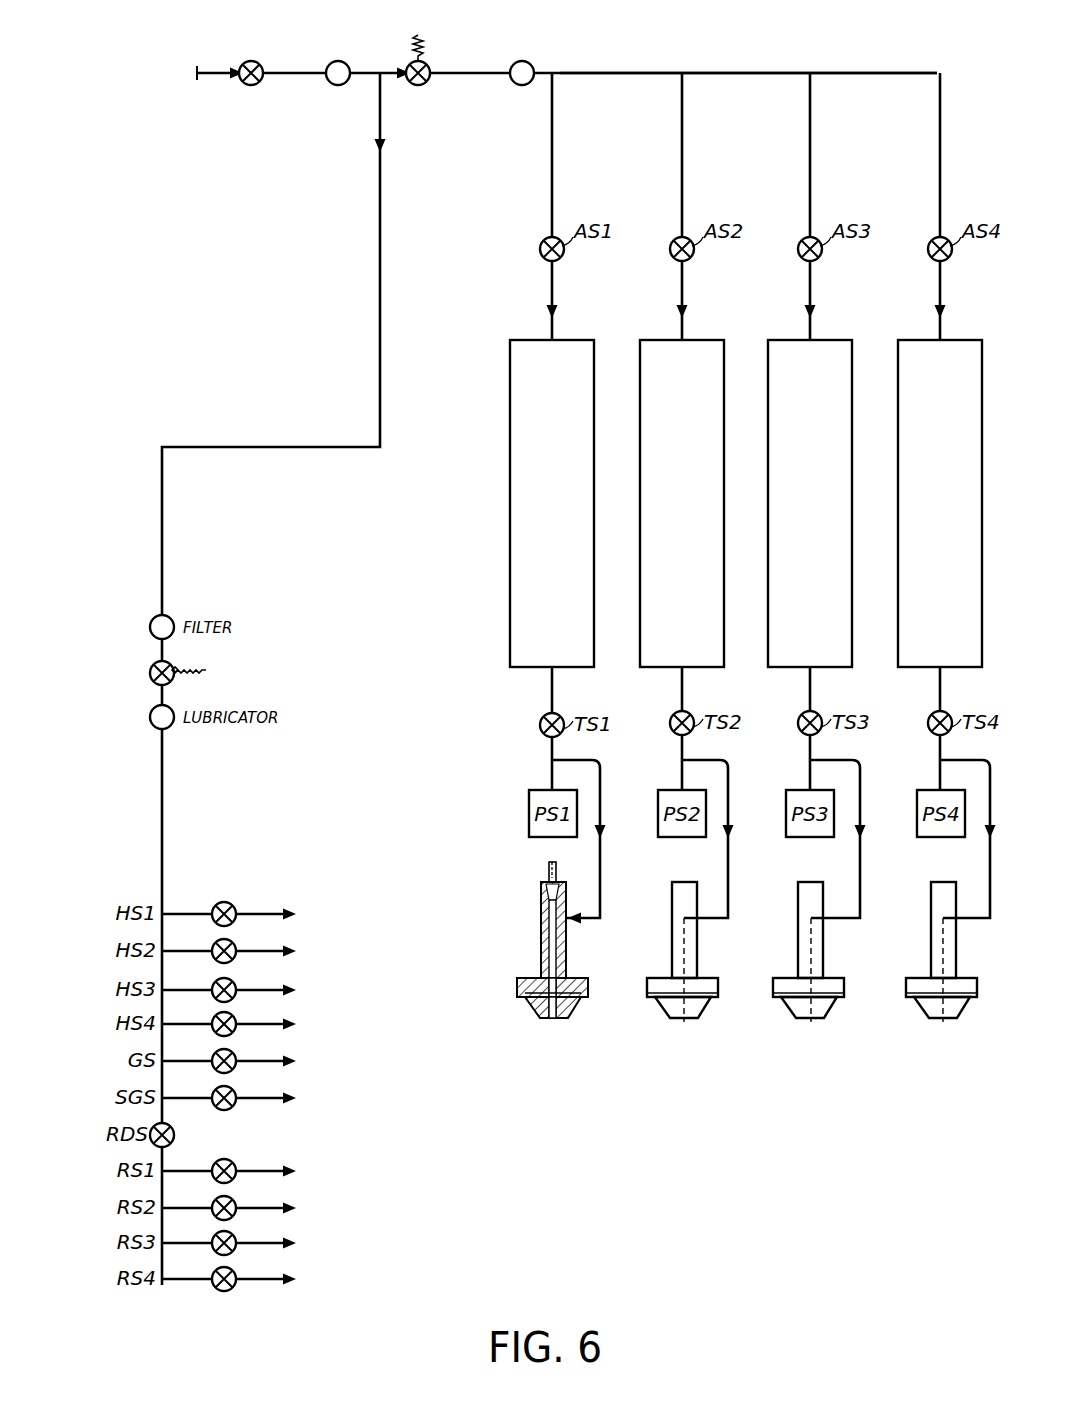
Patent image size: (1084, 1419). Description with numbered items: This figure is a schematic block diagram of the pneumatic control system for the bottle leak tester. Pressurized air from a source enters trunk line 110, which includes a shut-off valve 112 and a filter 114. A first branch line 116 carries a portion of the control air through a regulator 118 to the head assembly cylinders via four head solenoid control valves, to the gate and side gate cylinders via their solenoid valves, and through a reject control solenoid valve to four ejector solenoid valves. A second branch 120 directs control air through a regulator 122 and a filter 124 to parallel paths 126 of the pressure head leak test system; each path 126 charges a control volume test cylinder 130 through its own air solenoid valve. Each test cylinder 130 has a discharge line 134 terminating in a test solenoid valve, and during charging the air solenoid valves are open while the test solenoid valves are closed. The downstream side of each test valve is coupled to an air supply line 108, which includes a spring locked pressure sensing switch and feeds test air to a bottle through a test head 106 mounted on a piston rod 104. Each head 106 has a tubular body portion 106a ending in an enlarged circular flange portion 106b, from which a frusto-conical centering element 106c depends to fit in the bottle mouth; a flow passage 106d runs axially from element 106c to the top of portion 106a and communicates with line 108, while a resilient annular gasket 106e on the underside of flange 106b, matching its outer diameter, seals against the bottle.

The piston rod 104 is at (546, 869).
The test head 106 is at (738, 961).
The tubular body portion 106a is at (541, 905).
The enlarged circular flange portion 106b is at (519, 986).
The frusto-conical shaped centering element 106c is at (571, 1008).
The flow passage 106d is at (556, 960).
The resilient annular gasket 106e is at (524, 998).
The air supply line 108 is at (601, 857).
The trunk line 110 is at (213, 80).
The shut-off valve 112 is at (247, 85).
The filter 114 is at (334, 85).
The first branch line 116 is at (381, 303).
The regulator 118 is at (170, 684).
The second branch 120 is at (622, 73).
The regulator 122 is at (418, 85).
The filter 124 is at (518, 85).
The parallel paths 126 is at (553, 146).
The control volume test cylinder 130 is at (536, 622).
The discharge line 134 is at (550, 693).